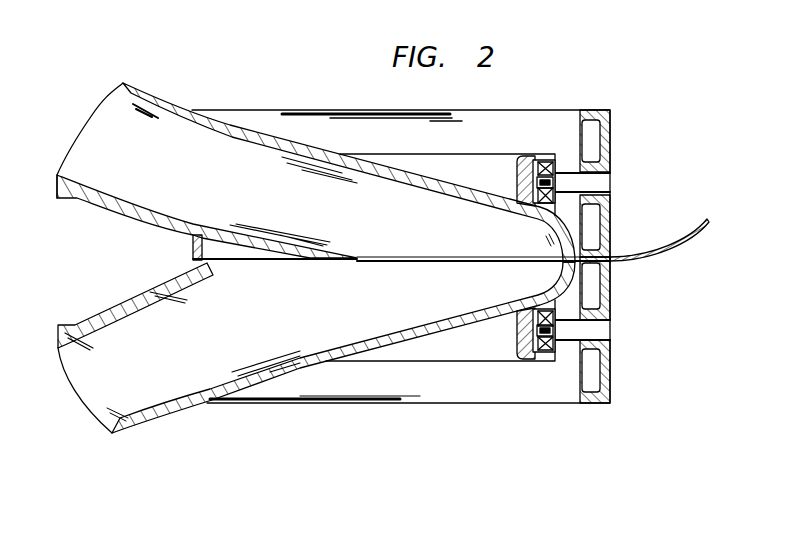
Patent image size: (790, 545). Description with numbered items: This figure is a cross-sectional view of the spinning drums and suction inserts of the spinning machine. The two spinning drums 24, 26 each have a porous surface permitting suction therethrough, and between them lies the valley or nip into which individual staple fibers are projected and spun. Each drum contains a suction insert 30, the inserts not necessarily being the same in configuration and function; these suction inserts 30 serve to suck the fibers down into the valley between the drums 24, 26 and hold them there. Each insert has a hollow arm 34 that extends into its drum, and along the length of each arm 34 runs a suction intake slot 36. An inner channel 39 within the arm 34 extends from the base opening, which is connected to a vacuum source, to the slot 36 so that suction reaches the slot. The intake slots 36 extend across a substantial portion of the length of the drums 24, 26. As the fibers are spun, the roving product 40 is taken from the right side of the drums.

The spinning drum 24 is at (612, 143).
The spinning drum 26 is at (614, 374).
The suction insert 30 is at (153, 102).
The arm 34 is at (163, 285).
The suction intake slot 36 is at (490, 258).
The inner channel 39 is at (180, 189).
The roving product 40 is at (676, 238).